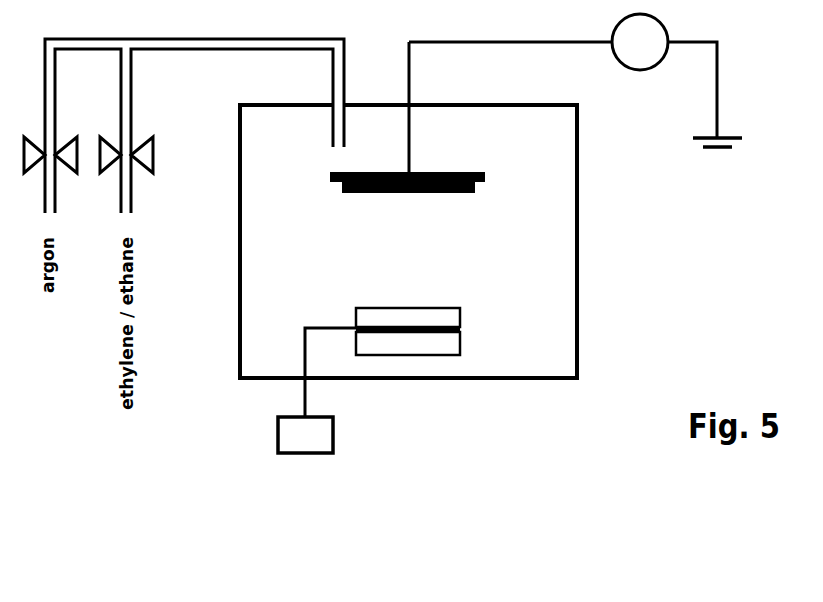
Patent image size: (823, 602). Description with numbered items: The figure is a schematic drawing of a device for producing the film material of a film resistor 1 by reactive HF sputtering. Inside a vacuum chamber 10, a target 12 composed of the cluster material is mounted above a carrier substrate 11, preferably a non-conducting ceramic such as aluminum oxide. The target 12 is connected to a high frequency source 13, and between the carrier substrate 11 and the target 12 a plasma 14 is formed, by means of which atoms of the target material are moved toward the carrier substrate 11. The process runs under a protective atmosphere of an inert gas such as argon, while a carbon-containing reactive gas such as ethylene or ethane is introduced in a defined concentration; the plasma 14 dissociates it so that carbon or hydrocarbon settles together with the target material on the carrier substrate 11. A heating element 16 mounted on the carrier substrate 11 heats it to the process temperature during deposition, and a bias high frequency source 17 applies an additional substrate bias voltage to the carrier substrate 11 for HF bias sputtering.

The film resistor 1 is at (370, 318).
The vacuum chamber 10 is at (579, 354).
The carrier substrate 11 is at (460, 330).
The target 12 is at (477, 192).
The high frequency source 13 is at (637, 70).
The plasma 14 is at (447, 268).
The heating element 16 is at (455, 347).
The bias high frequency source 17 is at (333, 436).